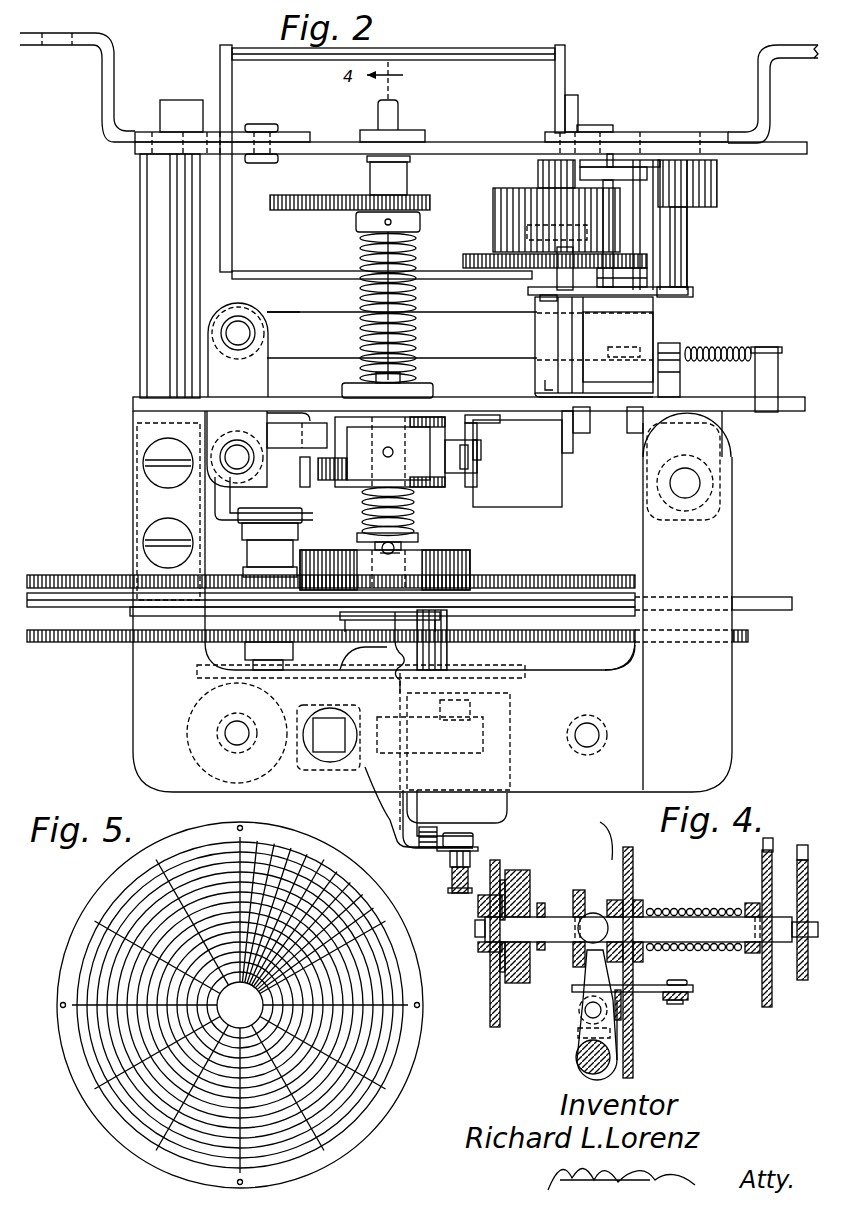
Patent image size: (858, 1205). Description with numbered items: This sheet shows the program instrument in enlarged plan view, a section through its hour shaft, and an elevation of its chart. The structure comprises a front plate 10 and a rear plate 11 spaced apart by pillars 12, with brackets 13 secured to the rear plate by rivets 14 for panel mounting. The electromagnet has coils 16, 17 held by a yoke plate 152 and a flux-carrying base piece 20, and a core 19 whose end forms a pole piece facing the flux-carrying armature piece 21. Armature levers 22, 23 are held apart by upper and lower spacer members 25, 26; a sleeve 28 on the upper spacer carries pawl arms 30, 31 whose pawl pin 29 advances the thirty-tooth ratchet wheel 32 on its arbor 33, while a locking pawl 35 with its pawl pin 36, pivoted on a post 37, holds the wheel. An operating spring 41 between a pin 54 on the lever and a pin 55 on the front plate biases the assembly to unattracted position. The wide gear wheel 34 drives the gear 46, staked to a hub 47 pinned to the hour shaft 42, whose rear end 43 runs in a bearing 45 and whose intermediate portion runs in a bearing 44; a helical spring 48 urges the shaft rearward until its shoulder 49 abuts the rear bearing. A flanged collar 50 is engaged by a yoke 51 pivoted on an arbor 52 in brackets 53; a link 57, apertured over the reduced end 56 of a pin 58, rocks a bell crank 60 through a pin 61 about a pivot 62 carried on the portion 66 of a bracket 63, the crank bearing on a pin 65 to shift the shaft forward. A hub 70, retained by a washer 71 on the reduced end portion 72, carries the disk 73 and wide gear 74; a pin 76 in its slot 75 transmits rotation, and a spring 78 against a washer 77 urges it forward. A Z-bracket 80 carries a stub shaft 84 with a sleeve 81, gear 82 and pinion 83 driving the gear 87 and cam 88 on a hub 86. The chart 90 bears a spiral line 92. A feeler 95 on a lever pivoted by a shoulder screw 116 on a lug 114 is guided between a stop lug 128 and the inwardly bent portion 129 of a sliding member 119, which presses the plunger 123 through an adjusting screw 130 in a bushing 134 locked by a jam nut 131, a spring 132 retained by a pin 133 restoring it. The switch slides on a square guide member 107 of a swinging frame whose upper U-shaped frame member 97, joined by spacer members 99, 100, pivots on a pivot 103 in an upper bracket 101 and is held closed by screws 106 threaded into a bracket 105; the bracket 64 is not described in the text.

In FIG. 2, the front plate 10 is at (133, 405).
In FIG. 4, the front plate 10 is at (608, 840).
In FIG. 2, the rear plate 11 is at (135, 150).
In FIG. 4, the rear plate 11 is at (775, 842).
In FIG. 2, the pillars 12 is at (140, 268).
In FIG. 2, the brackets 13 is at (115, 75).
In FIG. 2, the rivets 14 is at (270, 124).
In FIG. 2, the coil 16 is at (540, 507).
In FIG. 2, the coil 17 is at (525, 48).
In FIG. 2, the core 19 is at (220, 198).
In FIG. 2, the flux-carrying base piece 20 is at (190, 90).
In FIG. 2, the flux-carrying armature piece 21 is at (610, 130).
In FIG. 2, the armature lever 22 is at (635, 433).
In FIG. 2, the armature lever 23 is at (612, 165).
In FIG. 2, the upper spacer member 25 is at (590, 332).
In FIG. 2, the lower spacer member 26 is at (645, 243).
In FIG. 2, the sleeve 28 is at (650, 274).
In FIG. 2, the pawl pin 29 is at (528, 280).
In FIG. 2, the pawl arm 30 is at (540, 298).
In FIG. 2, the pawl arm 31 is at (527, 232).
In FIG. 2, the ratchet wheel 32 is at (463, 258).
In FIG. 2, the arbor 33 is at (545, 370).
In FIG. 2, the gear wheel 34 is at (500, 188).
In FIG. 2, the locking pawl 35 is at (693, 292).
In FIG. 2, the pawl pin 36 is at (560, 296).
In FIG. 2, the post 37 is at (690, 228).
In FIG. 2, the operating spring 41 is at (730, 347).
In FIG. 2, the hour shaft 42 is at (410, 180).
In FIG. 4, the hour shaft 42 is at (712, 915).
In FIG. 2, the rear end 43 is at (400, 112).
In FIG. 4, the rear end 43 is at (805, 940).
In FIG. 2, the bearing 44 is at (433, 390).
In FIG. 4, the bearing 44 is at (640, 900).
In FIG. 2, the bearing 45 is at (425, 137).
In FIG. 4, the bearing 45 is at (803, 845).
In FIG. 2, the gear 46 is at (305, 195).
In FIG. 4, the gear 46 is at (762, 1005).
In FIG. 2, the hub 47 is at (356, 222).
In FIG. 4, the hub 47 is at (752, 902).
In FIG. 2, the helical spring 48 is at (360, 256).
In FIG. 4, the helical spring 48 is at (680, 908).
In FIG. 4, the shoulder 49 is at (798, 900).
In FIG. 2, the flanged collar 50 is at (395, 460).
In FIG. 4, the flanged collar 50 is at (593, 912).
In FIG. 4, the yoke 51 is at (585, 975).
In FIG. 2, the arbor 52 is at (482, 458).
In FIG. 4, the arbor 52 is at (576, 1052).
In FIG. 2, the brackets 53 is at (490, 428).
In FIG. 2, the pin 54 is at (676, 343).
In FIG. 2, the pin 55 is at (770, 347).
In FIG. 2, the reduced end 56 is at (640, 345).
In FIG. 2, the link 57 is at (325, 325).
In FIG. 4, the link 57 is at (693, 988).
In FIG. 2, the pin 58 is at (600, 430).
In FIG. 2, the bell crank 60 is at (268, 386).
In FIG. 4, the bell crank 60 is at (640, 988).
In FIG. 2, the pin 61 is at (240, 330).
In FIG. 4, the pin 61 is at (676, 980).
In FIG. 2, the pivot 62 is at (237, 455).
In FIG. 4, the pivot 62 is at (585, 1008).
In FIG. 2, the bracket 63 is at (300, 413).
In FIG. 4, the bracket 63 is at (620, 1050).
In FIG. 4, the lever plate 64 is at (620, 1015).
In FIG. 2, the pin 65 is at (318, 478).
In FIG. 2, the turned down forwardly extending portion 66 is at (260, 476).
In FIG. 4, the turned down forwardly extending portion 66 is at (578, 1030).
In FIG. 4, the hub 70 is at (478, 950).
In FIG. 4, the washer 71 is at (478, 900).
In FIG. 4, the reduced end portion 72 is at (475, 922).
In FIG. 2, the disk 73 is at (752, 590).
In FIG. 4, the disk 73 is at (502, 880).
In FIG. 2, the gear 74 is at (470, 560).
In FIG. 4, the gear 74 is at (522, 870).
In FIG. 2, the slot 75 is at (400, 545).
In FIG. 4, the slot 75 is at (518, 900).
In FIG. 2, the pin 76 is at (405, 556).
In FIG. 4, the pin 76 is at (542, 902).
In FIG. 2, the washer 77 is at (357, 540).
In FIG. 4, the washer 77 is at (542, 952).
In FIG. 2, the spring 78 is at (395, 550).
In FIG. 4, the spring 78 is at (578, 890).
In FIG. 2, the Z-bracket 80 is at (220, 520).
In FIG. 2, the sleeve 81 is at (250, 620).
In FIG. 2, the gear 82 is at (590, 575).
In FIG. 2, the pinion 83 is at (210, 650).
In FIG. 2, the stub shaft 84 is at (268, 670).
In FIG. 2, the hub 86 is at (447, 656).
In FIG. 2, the gear 87 is at (88, 642).
In FIG. 2, the cam 88 is at (620, 665).
In FIG. 2, the chart 90 is at (580, 608).
In FIG. 4, the chart 90 is at (490, 987).
In FIG. 5, the spiral line 92 is at (193, 850).
In FIG. 2, the feeler 95 is at (440, 616).
In FIG. 2, the upper U-shaped frame member 97 is at (368, 800).
In FIG. 2, the spacer member 99 is at (362, 158).
In FIG. 2, the spacer member 100 is at (608, 736).
In FIG. 2, the upper bracket 101 is at (732, 440).
In FIG. 2, the pivot 103 is at (700, 483).
In FIG. 2, the bracket 105 is at (137, 440).
In FIG. 2, the screws 106 is at (150, 530).
In FIG. 2, the guide member 107 is at (328, 752).
In FIG. 2, the lug 114 is at (340, 715).
In FIG. 2, the shoulder screw 116 is at (402, 684).
In FIG. 2, the sliding member 119 is at (405, 832).
In FIG. 2, the plunger 123 is at (462, 832).
In FIG. 2, the stop lug 128 is at (318, 668).
In FIG. 2, the inwardly bent portion 129 is at (460, 695).
In FIG. 2, the adjusting screw 130 is at (448, 890).
In FIG. 2, the jam nut 131 is at (470, 868).
In FIG. 2, the spring 132 is at (432, 827).
In FIG. 2, the pin 133 is at (452, 875).
In FIG. 2, the bushing 134 is at (478, 849).
In FIG. 2, the yoke plate 152 is at (568, 455).